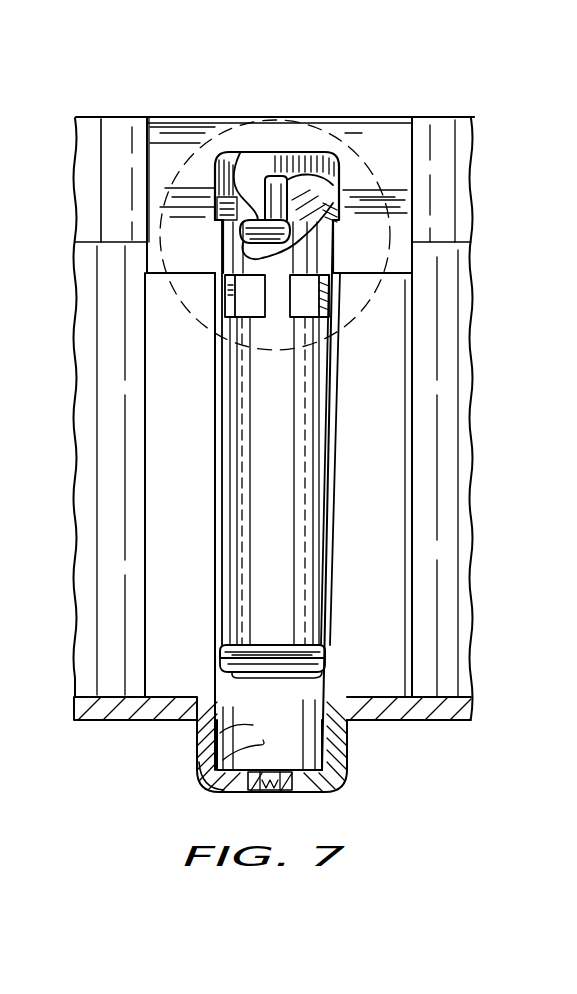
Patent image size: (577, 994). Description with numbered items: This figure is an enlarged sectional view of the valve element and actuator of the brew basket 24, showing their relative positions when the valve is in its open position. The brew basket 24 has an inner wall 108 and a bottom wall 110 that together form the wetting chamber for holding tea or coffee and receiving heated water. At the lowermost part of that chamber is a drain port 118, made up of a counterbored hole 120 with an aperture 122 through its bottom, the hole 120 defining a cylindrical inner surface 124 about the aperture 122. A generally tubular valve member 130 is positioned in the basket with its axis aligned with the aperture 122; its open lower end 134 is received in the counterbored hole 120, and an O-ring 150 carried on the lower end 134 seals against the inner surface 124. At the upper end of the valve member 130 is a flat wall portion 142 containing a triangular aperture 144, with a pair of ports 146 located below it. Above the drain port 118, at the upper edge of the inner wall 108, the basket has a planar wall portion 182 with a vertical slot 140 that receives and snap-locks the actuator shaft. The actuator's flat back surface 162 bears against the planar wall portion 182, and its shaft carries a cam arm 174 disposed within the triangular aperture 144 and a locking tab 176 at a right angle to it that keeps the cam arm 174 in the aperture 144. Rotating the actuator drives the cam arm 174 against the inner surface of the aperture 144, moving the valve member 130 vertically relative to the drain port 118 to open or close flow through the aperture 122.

The brew basket 24 is at (457, 106).
The inner wall 108 is at (423, 586).
The bottom wall 110 is at (117, 697).
The drain port 118 is at (347, 744).
The counterbored hole 120 is at (200, 750).
The aperture 122 is at (304, 801).
The cylindrical inner surface 124 is at (211, 786).
The valve member 130 is at (279, 403).
The lower end 134 is at (291, 686).
The slot 140 is at (288, 114).
The flat wall portion 142 is at (262, 152).
The triangular aperture 144 is at (343, 155).
The ports 146 is at (324, 293).
The O-ring 150 is at (326, 645).
The back surface 162 is at (366, 108).
The cam arm 174 is at (253, 188).
The locking tab 176 is at (142, 240).
The planar wall portion 182 is at (170, 143).